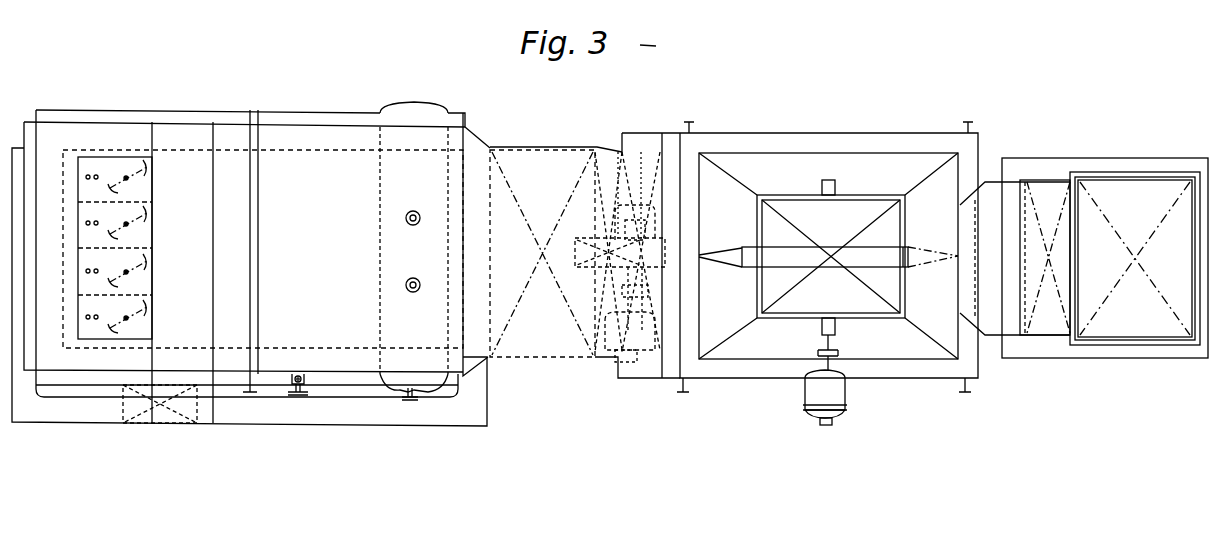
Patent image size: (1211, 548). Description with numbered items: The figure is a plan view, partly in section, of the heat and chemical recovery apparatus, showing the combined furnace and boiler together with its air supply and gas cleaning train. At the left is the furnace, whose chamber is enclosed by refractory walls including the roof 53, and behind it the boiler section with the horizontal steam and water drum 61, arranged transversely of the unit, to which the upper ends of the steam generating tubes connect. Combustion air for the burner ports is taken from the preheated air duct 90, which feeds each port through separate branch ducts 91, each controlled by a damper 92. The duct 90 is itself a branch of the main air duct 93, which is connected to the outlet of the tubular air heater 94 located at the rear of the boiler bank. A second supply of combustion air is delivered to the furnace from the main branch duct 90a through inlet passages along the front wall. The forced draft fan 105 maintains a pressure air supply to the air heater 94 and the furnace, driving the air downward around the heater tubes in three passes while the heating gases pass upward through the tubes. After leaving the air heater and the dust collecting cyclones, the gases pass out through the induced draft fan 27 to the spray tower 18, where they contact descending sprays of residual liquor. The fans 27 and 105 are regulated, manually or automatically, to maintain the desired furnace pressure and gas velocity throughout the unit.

The spray tower 18 is at (1140, 309).
The induced draft fan 27 is at (838, 248).
The roof 53 is at (113, 137).
The steam and water drum 61 is at (417, 105).
The preheated air duct 90 is at (202, 250).
The main branch duct 90a is at (90, 423).
The branch ducts 91 is at (143, 232).
The dampers 92 is at (148, 296).
The main air duct 93 is at (348, 418).
The tubular air heater 94 is at (538, 170).
The forced draft fan 105 is at (653, 240).